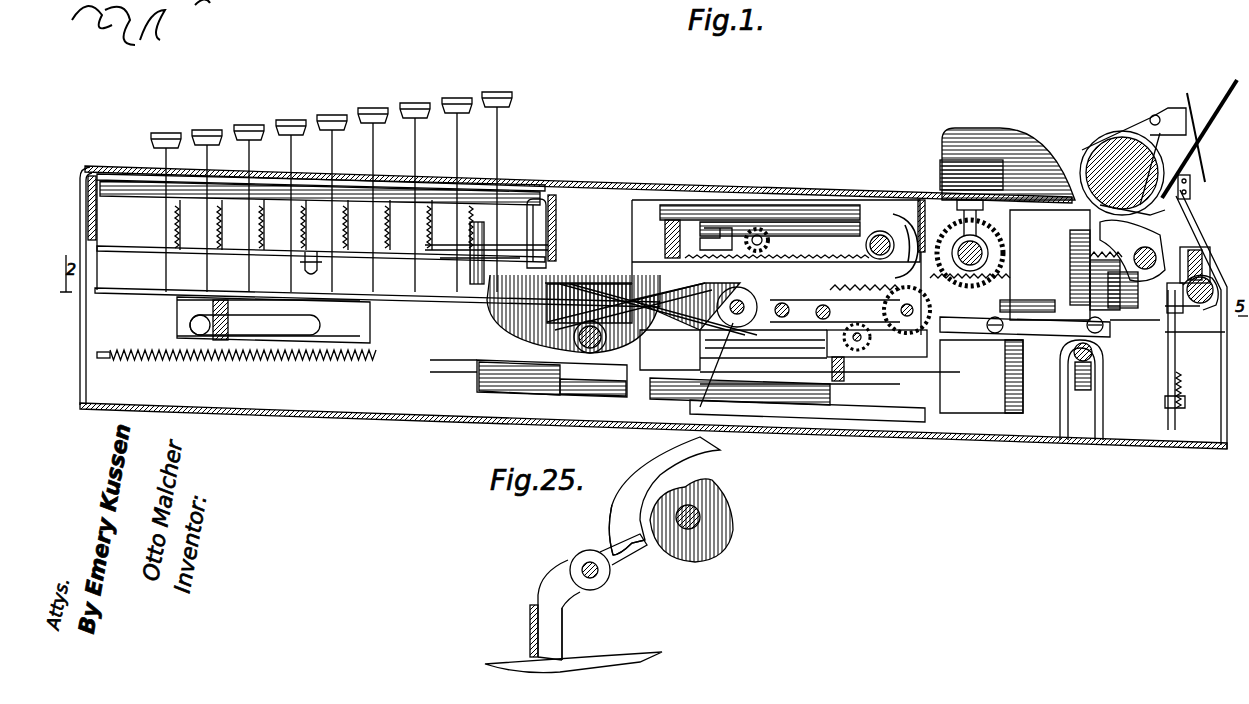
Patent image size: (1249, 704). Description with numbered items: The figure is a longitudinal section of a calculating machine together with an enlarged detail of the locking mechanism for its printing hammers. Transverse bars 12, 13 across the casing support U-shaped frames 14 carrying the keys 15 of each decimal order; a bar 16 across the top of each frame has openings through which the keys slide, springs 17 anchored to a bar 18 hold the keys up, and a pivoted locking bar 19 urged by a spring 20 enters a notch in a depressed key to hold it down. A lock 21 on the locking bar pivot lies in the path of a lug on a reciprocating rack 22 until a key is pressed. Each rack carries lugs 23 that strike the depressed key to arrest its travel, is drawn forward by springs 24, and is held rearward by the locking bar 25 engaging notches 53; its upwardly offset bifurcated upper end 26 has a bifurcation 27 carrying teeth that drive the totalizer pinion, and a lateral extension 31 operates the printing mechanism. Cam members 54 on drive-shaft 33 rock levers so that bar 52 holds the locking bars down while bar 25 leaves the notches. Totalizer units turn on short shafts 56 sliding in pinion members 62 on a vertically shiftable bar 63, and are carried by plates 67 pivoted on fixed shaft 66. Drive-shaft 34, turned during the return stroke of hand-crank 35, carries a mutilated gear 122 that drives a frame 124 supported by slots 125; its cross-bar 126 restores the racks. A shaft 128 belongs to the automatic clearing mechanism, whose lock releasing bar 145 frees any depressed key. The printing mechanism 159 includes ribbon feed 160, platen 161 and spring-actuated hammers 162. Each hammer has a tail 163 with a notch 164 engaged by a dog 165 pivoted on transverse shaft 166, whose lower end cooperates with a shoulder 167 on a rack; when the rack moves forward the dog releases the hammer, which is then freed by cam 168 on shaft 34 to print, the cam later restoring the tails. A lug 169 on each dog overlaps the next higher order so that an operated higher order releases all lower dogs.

In FIG. 1, the U-shaped frame 14 is at (88, 173).
In FIG. 1, the transverse bar 12 is at (96, 212).
In FIG. 1, the transverse bar 13 is at (553, 214).
In FIG. 1, the keys 15 is at (417, 145).
In FIG. 1, the bar 16 is at (507, 187).
In FIG. 1, the springs 17 is at (300, 218).
In FIG. 1, the bar 18 is at (190, 222).
In FIG. 1, the pivoted locking bar 19 is at (113, 245).
In FIG. 1, the spring 20 is at (312, 270).
In FIG. 1, the lock 21 is at (533, 266).
In FIG. 1, the reciprocating rack 22 is at (450, 360).
In FIG. 25, the reciprocating rack 22 is at (623, 660).
In FIG. 1, the lugs 23 is at (330, 325).
In FIG. 1, the springs 24 is at (327, 360).
In FIG. 1, the locking bar 25 is at (490, 335).
In FIG. 1, the bifurcated upper end 26 is at (632, 236).
In FIG. 1, the bifurcation 27 is at (807, 210).
In FIG. 1, the extension 31 is at (980, 403).
In FIG. 1, the drive-shaft 33 is at (700, 342).
In FIG. 1, the drive-shaft 34 is at (925, 308).
In FIG. 25, the drive-shaft 34 is at (712, 530).
In FIG. 1, the hand-crank 35 is at (840, 326).
In FIG. 1, the bar 52 is at (470, 243).
In FIG. 1, the notches 53 is at (487, 317).
In FIG. 1, the cam members 54 is at (738, 327).
In FIG. 1, the short shaft 56 is at (760, 233).
In FIG. 1, the pinion members 62 is at (727, 240).
In FIG. 1, the bar 63 is at (670, 223).
In FIG. 1, the fixed shaft 66 is at (878, 240).
In FIG. 1, the plates 67 is at (850, 249).
In FIG. 1, the mutilated gear 122 is at (922, 200).
In FIG. 1, the frame 124 is at (690, 423).
In FIG. 1, the slots 125 is at (824, 354).
In FIG. 1, the cross-bar 126 is at (590, 282).
In FIG. 1, the shaft 128 is at (815, 345).
In FIG. 1, the lock releasing bar 145 is at (548, 246).
In FIG. 1, the printing mechanism 159 is at (1006, 292).
In FIG. 1, the ribbon feed 160 is at (1018, 190).
In FIG. 1, the platen 161 is at (1113, 133).
In FIG. 1, the printing hammers 162 is at (905, 235).
In FIG. 25, the printing hammers 162 is at (660, 467).
In FIG. 25, the tail 163 is at (623, 527).
In FIG. 25, the notch 164 is at (648, 548).
In FIG. 25, the dog 165 is at (545, 575).
In FIG. 25, the transverse shaft 166 is at (582, 567).
In FIG. 25, the shoulder 167 is at (567, 643).
In FIG. 25, the cam 168 is at (730, 514).
In FIG. 25, the lug 169 is at (530, 638).